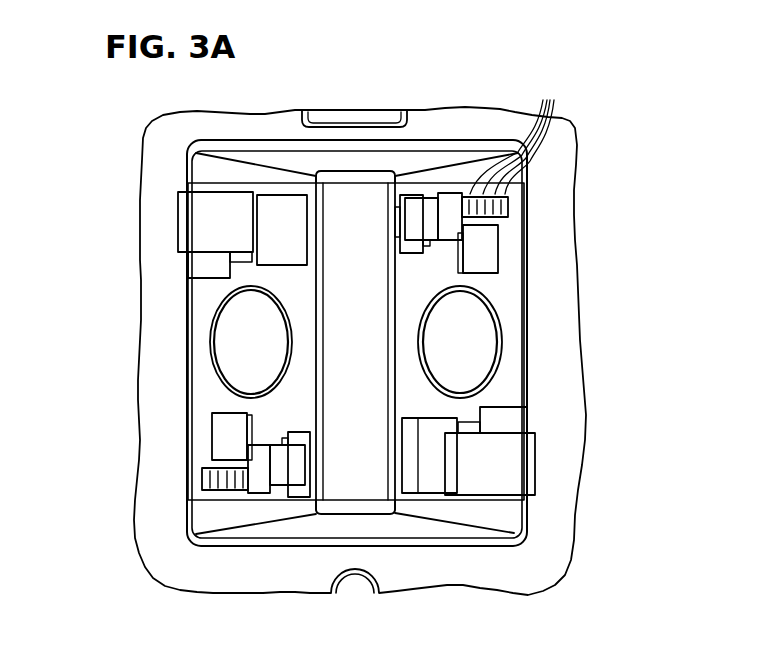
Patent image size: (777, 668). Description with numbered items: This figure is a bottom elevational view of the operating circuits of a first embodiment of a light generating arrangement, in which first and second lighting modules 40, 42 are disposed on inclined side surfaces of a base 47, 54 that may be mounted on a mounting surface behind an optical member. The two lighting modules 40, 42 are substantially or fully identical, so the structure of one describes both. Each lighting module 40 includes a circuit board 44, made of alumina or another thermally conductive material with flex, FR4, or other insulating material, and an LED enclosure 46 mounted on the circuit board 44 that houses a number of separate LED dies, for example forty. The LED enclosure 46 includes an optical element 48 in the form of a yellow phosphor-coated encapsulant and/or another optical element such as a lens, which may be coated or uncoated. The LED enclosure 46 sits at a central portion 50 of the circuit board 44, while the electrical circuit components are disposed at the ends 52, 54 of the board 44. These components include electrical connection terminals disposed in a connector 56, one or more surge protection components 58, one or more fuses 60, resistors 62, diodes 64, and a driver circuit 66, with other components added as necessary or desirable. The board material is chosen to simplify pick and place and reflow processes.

The first lighting module 40 is at (203, 352).
The second lighting module 42 is at (507, 370).
The circuit board 44 is at (223, 293).
The LED enclosure 46 is at (227, 337).
The base 47 is at (367, 187).
The optical element 48 is at (243, 363).
The central portion 50 is at (200, 327).
The end of circuit board 52 is at (313, 197).
The end of circuit board 54 is at (323, 528).
The connector 56 is at (207, 220).
The surge protection component 58 is at (283, 203).
The fuse 60 is at (470, 420).
The resistors 62 is at (511, 147).
The diodes 64 is at (258, 483).
The driver circuit 66 is at (485, 247).